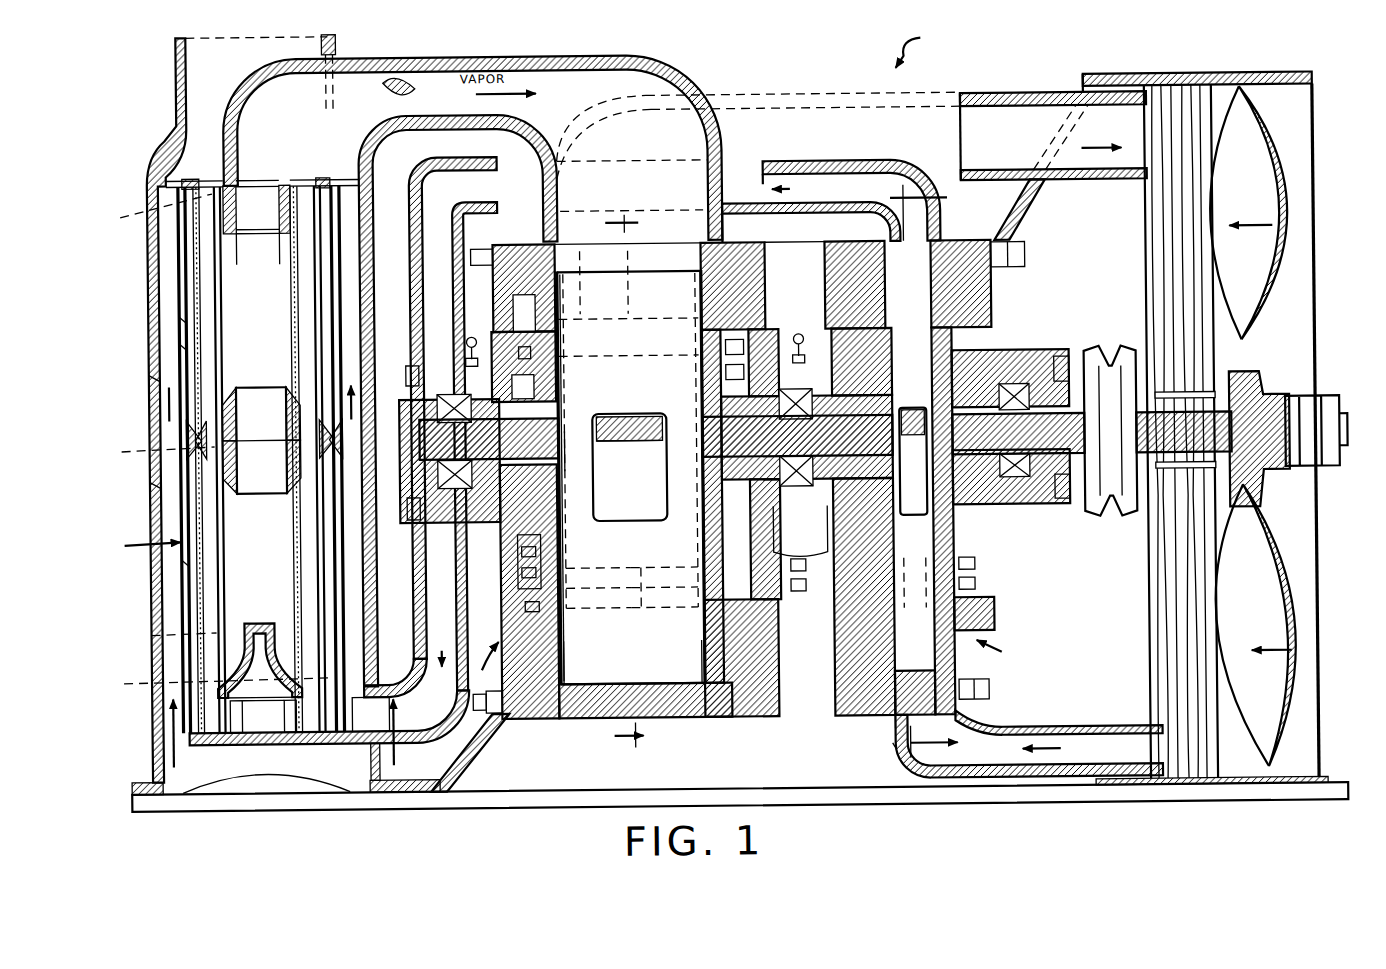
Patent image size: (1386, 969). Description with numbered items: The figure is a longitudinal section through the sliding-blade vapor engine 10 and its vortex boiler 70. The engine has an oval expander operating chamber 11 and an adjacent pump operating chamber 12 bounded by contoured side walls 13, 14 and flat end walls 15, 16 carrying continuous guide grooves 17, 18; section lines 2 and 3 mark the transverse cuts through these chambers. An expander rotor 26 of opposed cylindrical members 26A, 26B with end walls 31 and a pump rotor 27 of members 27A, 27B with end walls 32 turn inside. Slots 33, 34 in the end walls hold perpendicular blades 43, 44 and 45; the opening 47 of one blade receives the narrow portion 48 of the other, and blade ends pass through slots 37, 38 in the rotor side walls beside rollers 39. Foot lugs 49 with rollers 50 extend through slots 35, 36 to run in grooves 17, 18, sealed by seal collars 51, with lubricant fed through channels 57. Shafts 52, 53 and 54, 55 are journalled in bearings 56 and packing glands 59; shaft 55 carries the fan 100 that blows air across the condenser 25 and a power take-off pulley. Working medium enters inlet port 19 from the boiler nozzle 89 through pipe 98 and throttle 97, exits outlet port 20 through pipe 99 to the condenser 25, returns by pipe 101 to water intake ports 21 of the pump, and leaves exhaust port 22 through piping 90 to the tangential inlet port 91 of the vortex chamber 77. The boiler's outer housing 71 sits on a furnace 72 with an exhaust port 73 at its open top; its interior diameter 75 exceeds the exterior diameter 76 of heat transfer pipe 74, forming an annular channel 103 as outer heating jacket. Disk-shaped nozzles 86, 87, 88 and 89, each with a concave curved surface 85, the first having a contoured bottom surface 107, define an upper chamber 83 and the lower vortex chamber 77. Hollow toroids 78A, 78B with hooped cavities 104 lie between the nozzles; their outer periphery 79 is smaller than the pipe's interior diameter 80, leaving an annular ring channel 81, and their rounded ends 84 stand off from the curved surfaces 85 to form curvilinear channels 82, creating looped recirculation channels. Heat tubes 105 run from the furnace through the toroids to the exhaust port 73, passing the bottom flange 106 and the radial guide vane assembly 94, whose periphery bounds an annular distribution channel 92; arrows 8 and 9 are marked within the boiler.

The section line 2- 2 is at (632, 479).
The section line 3- 3 is at (932, 471).
The liquid flow arrows 8 is at (282, 739).
The vapor flow arrows 9 is at (260, 390).
The sliding-blade vapor engine 10 is at (918, 49).
The expander operating chamber 11 is at (485, 663).
The pump operating chamber 12 is at (998, 650).
The side wall 13 is at (582, 717).
The side wall 14 is at (880, 715).
The flat end walls 15 is at (562, 648).
The flat end walls 16 is at (945, 665).
The guide groove 17 is at (495, 334).
The guide groove 18 is at (808, 352).
The inlet port 19 is at (588, 243).
The outlet port 20 is at (673, 243).
The water intake ports 21 is at (885, 748).
The water exhaust port 22 is at (942, 243).
The condenser 25 is at (1148, 210).
The sliding-blade expander rotor 26 is at (610, 720).
The cylindrical member 26A is at (582, 607).
The cylindrical member 26B is at (683, 607).
The sliding-blade pump rotor 27 is at (985, 678).
The cylindrical member 27A is at (833, 628).
The cylindrical member 27B is at (993, 620).
The end wall 31 is at (540, 482).
The end wall 32 is at (960, 510).
The elongate rectangular slots 33 is at (561, 365).
The elongate rectangular slots 34 is at (1002, 335).
The rectangular slots 35 is at (563, 339).
The rectangular slots 36 is at (857, 330).
The slot 37 is at (590, 271).
The slot 38 is at (856, 243).
The rollers 39 is at (645, 607).
The rigid blade 43 is at (601, 478).
The rigid blade 44 is at (833, 655).
The rigid blade 45 is at (628, 442).
The central rectangular opening 47 is at (599, 500).
The central narrow rectangular portion 48 is at (630, 440).
The foot lug 49 is at (561, 407).
The roller 50 is at (561, 387).
The elastomeric seal collar 51 is at (524, 345).
The shaft 52 is at (479, 443).
The shaft 53 is at (807, 437).
The shaft 54 is at (797, 436).
The shaft 55 is at (1091, 432).
The bearings 56 is at (800, 531).
The channels 57 is at (468, 345).
The packing glands 59 is at (562, 460).
The vortex boiler 70 is at (140, 176).
The outer housing 71 is at (149, 266).
The heat carrier source 72 is at (213, 803).
The exhaust port 73 is at (180, 80).
The heat transfer pipe 74 is at (137, 541).
The interior diameter 75 is at (181, 315).
The exterior diameter 76 is at (181, 342).
The lower vortex chamber 77 is at (263, 716).
The lower elongate hollow toroid 78A is at (150, 632).
The upper elongate hollow toroid 78B is at (266, 384).
The outer periphery 79 is at (150, 373).
The interior diameter 80 is at (181, 558).
The annular ring channel 81 is at (181, 292).
The curvilinear channels 82 is at (343, 200).
The upper chamber 83 is at (259, 392).
The rounded ends 84 is at (376, 650).
The concave curved surface 85 is at (218, 443).
The first nozzle 86 is at (240, 619).
The third nozzle 87 is at (232, 384).
The fourth nozzle 88 is at (280, 490).
The second nozzle 89 is at (238, 195).
The piping 90 is at (420, 736).
The inlet port 91 is at (385, 680).
The annular ring distribution channel 92 is at (370, 714).
The radial guide vane assembly 94 is at (160, 696).
The throttle 97 is at (419, 86).
The pipe 98 is at (674, 57).
The pipe 99 is at (1022, 96).
The fan 100 is at (1290, 250).
The pipe 101 is at (1035, 730).
The annular ring channel 103 is at (150, 480).
The hooped interior cavities 104 is at (219, 290).
The heat tubes 105 is at (192, 176).
The flange 106 is at (340, 745).
The inwardly contoured bottom surface 107 is at (272, 665).